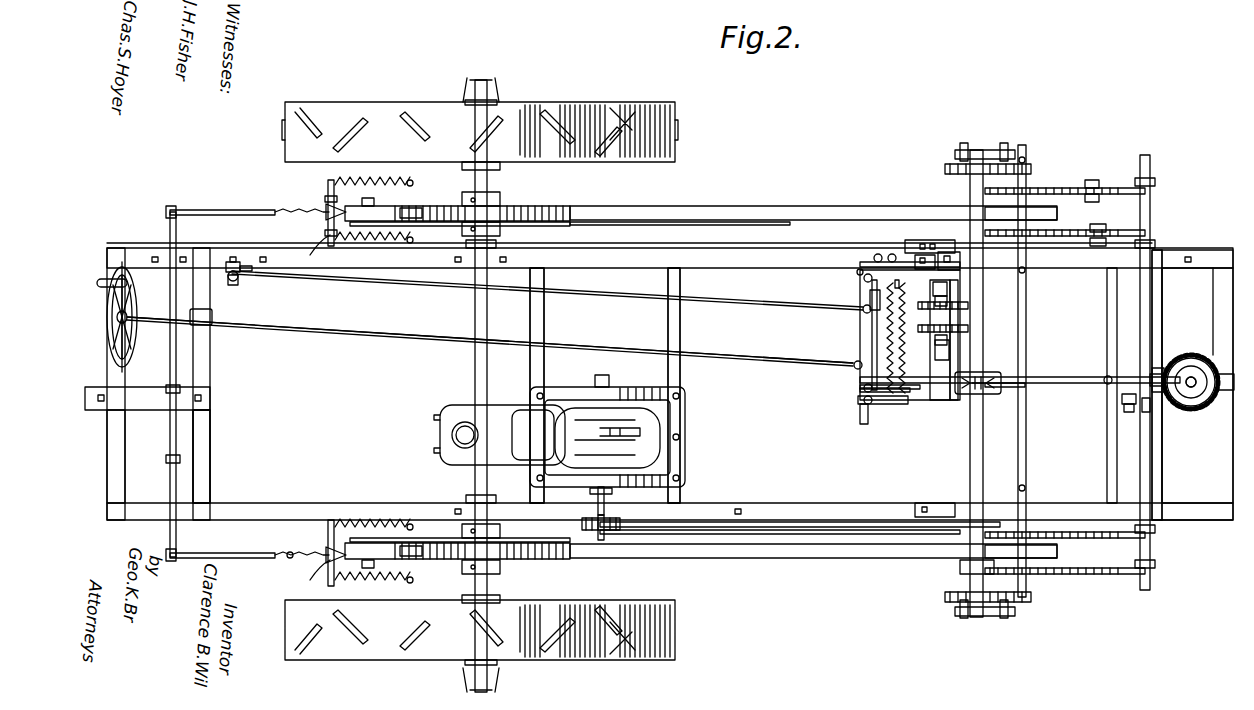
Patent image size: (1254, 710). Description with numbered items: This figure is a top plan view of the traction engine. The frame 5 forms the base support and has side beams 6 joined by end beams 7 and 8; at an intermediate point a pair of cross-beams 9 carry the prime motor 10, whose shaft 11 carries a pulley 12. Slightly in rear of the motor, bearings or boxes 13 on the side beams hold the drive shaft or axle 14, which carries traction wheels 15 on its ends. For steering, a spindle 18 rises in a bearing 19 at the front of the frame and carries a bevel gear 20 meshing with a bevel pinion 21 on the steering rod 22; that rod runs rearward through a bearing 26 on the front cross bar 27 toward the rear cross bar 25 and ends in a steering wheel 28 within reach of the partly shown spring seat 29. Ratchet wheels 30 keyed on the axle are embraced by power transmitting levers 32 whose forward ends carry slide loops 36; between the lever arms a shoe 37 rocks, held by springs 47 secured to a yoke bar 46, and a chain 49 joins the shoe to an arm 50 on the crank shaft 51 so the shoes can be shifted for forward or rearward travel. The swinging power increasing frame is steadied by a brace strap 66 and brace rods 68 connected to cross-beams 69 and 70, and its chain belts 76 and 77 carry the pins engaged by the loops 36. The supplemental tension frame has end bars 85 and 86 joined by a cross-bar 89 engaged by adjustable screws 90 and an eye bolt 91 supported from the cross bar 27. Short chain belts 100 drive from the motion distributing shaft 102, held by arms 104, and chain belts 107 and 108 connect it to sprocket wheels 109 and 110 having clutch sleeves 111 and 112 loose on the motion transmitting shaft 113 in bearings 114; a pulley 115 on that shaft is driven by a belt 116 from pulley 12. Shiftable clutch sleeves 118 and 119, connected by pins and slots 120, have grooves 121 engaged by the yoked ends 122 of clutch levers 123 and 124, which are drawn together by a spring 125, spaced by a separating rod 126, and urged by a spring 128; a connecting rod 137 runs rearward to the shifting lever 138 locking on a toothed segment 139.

The frame 5 is at (213, 468).
The side beams 6 is at (398, 270).
The rear end beam 7 is at (122, 450).
The front end beam 8 is at (1205, 304).
The cross-beams 9 is at (668, 322).
The prime motor 10 is at (530, 415).
The motor shaft 11 is at (610, 512).
The pulley 12 is at (608, 518).
The bearings or boxes 13 is at (470, 275).
The drive shaft or axle 14 is at (470, 348).
The traction wheels 15 is at (595, 108).
The spindle 18 is at (1186, 390).
The bearing 19 is at (1170, 425).
The bevel gear 20 is at (1180, 370).
The bevel pinion 21 is at (1150, 376).
The steering rod 22 is at (755, 366).
The rear cross beam or bar 25 is at (208, 436).
The bearing 26 is at (1154, 416).
The front cross beam or bar 27 is at (1168, 460).
The steering wheel 28 is at (128, 268).
The spring seat 29 is at (110, 395).
The ratchet wheels 30 is at (545, 206).
The power transmitting lever 32 is at (723, 206).
The slide loop 36 is at (1057, 212).
The shoe 37 is at (318, 391).
The yoke bar 46 is at (326, 188).
The springs 47 is at (368, 180).
The chain or flexible connection 49 is at (288, 558).
The arm 50 is at (222, 210).
The crank shaft 51 is at (170, 428).
The brace strap 66 is at (986, 392).
The brace rods 68 is at (962, 399).
The cross-beam 69 is at (862, 408).
The cross-beam 70 is at (1120, 400).
The chain belt 76 is at (1048, 192).
The chain belt 77 is at (1100, 232).
The end bars 85 is at (1080, 188).
The end bars 86 is at (1110, 236).
The cross-bar 89 is at (1150, 300).
The adjustable screws 90 is at (1148, 270).
The eye bolt 91 is at (1125, 408).
The short chain belts 100 is at (985, 166).
The motion distributing shaft 102 is at (962, 568).
The rearwardly projecting arms 104 is at (975, 152).
The chain belt 107 is at (970, 329).
The chain belt 108 is at (970, 306).
The sprocket wheel 109 is at (885, 320).
The sprocket wheel 110 is at (870, 292).
The clutch sleeve 111 is at (932, 398).
The clutch sleeve 112 is at (950, 300).
The motion transmitting shaft 113 is at (952, 402).
The bearings 114 is at (930, 240).
The pulley 115 is at (922, 534).
The belt 116 is at (778, 522).
The clutch sleeve 118 is at (950, 340).
The clutch sleeve 119 is at (955, 287).
The pins and slots 120 is at (942, 258).
The grooves 121 is at (930, 255).
The yoked or grooved ends 122 is at (893, 264).
The clutch lever 123 is at (858, 400).
The clutch lever 124 is at (858, 265).
The spring 125 is at (905, 352).
The separating rod 126 is at (900, 338).
The spring 128 is at (865, 390).
The connecting rod 137 is at (740, 297).
The shifting lever 138 is at (235, 285).
The toothed segment 139 is at (238, 262).